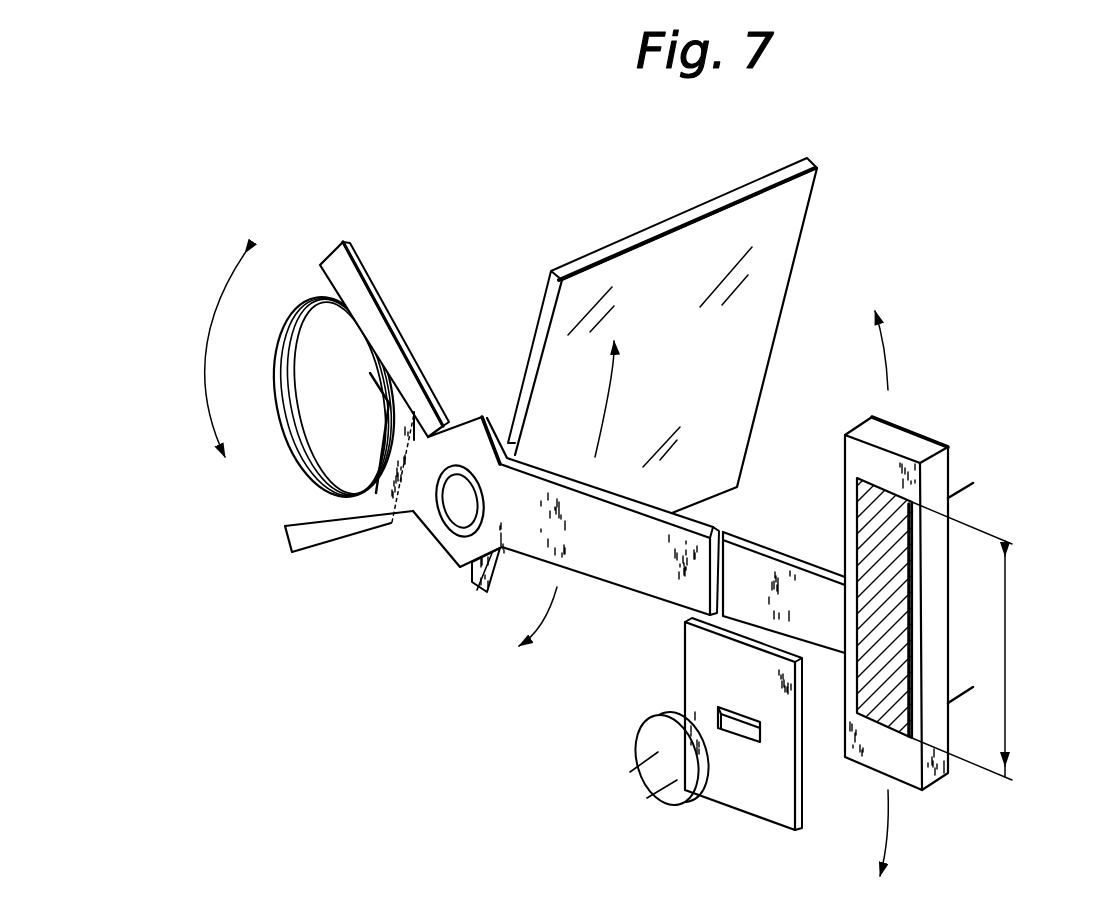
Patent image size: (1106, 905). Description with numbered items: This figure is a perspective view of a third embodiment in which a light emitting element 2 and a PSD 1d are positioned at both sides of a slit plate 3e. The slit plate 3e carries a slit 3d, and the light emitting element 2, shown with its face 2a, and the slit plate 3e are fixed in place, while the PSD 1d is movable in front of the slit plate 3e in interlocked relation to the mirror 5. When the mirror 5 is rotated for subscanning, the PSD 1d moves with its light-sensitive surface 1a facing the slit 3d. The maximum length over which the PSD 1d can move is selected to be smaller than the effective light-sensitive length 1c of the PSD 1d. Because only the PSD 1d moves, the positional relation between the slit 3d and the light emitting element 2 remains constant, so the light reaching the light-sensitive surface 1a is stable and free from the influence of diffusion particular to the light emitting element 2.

The light-sensitive surface 1a is at (888, 500).
The effective light-sensitive length 1c is at (1006, 660).
The PSD 1d is at (948, 463).
The light emitting element 2 is at (264, 461).
The lens surface 2a is at (303, 476).
The slit 3d is at (745, 742).
The slit plate 3e is at (720, 800).
The mirror 5 is at (707, 205).